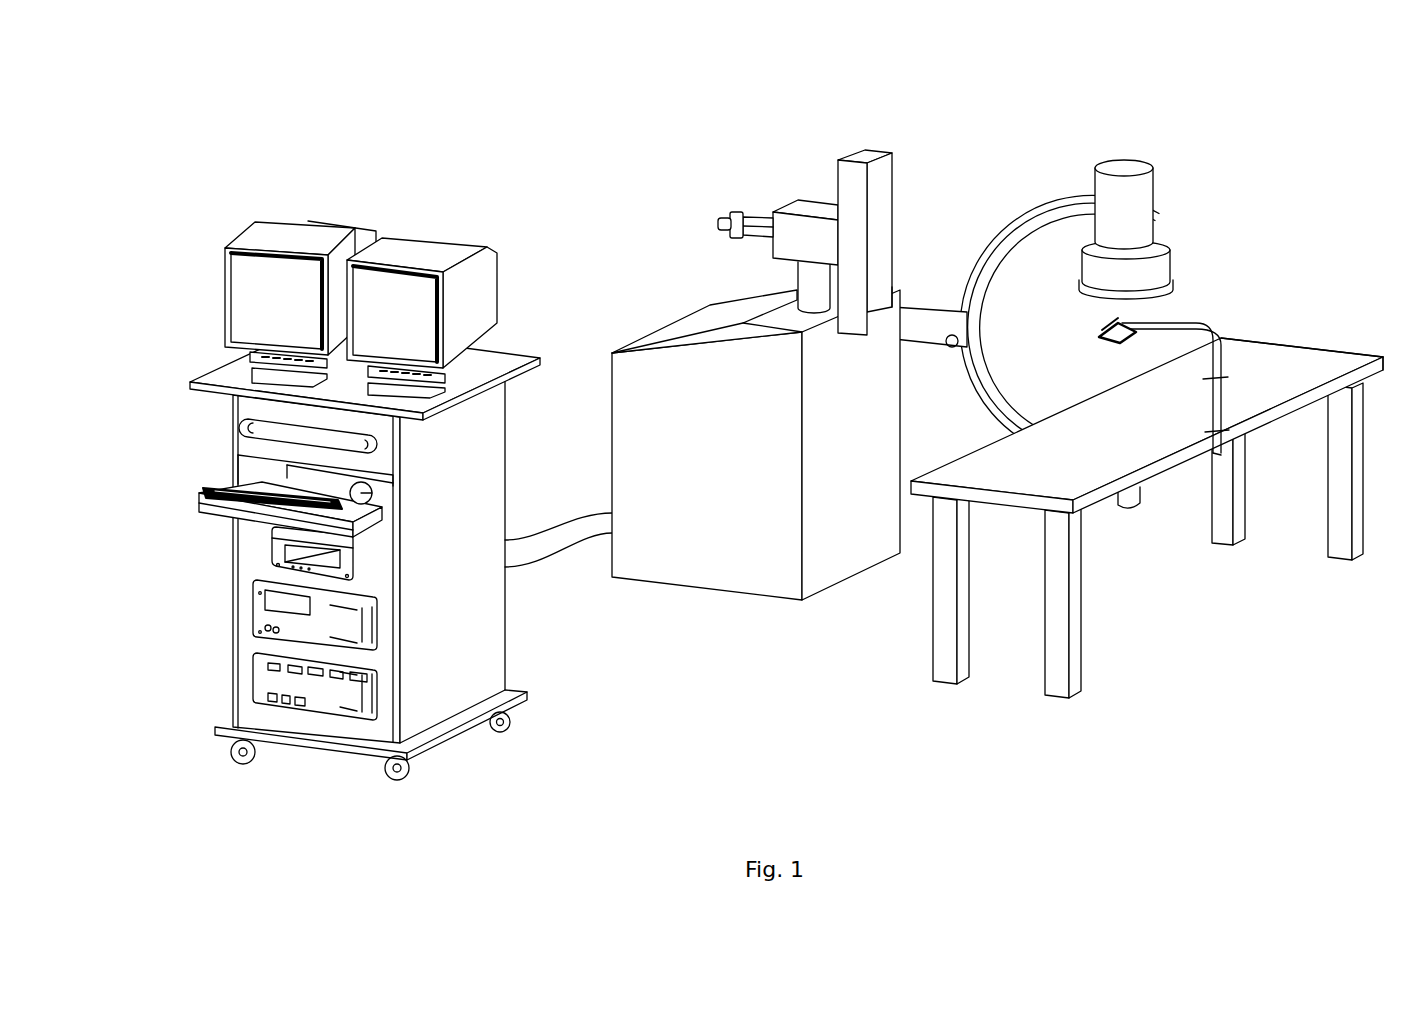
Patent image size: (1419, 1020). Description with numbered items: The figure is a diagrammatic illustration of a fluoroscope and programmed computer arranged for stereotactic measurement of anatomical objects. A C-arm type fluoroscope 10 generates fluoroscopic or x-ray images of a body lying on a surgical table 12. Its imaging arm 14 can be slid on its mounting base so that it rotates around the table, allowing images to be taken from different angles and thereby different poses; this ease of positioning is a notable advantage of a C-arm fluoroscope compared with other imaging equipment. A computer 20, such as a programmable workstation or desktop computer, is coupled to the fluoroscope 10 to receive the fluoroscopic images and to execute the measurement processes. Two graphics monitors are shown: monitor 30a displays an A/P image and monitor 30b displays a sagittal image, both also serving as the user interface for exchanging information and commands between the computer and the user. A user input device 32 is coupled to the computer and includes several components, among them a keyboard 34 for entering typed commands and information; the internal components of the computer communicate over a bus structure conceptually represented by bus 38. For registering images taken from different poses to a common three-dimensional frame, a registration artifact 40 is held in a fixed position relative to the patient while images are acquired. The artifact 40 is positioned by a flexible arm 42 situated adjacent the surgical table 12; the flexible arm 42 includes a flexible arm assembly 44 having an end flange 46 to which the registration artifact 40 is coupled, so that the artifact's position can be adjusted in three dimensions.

The C-arm type fluoroscope 10 is at (682, 283).
The surgical table 12 is at (1159, 523).
The imaging arm 14 is at (1040, 212).
The computer 20 is at (330, 623).
The monitor 30a is at (227, 243).
The monitor 30b is at (470, 243).
The user input device 32 is at (197, 498).
The keyboard 34 is at (235, 522).
The bus 38 is at (361, 493).
The registration artifact 40 is at (1102, 333).
The flexible arm 42 is at (1320, 342).
The flexible arm assembly 44 is at (1183, 323).
The end flange 46 is at (1127, 327).